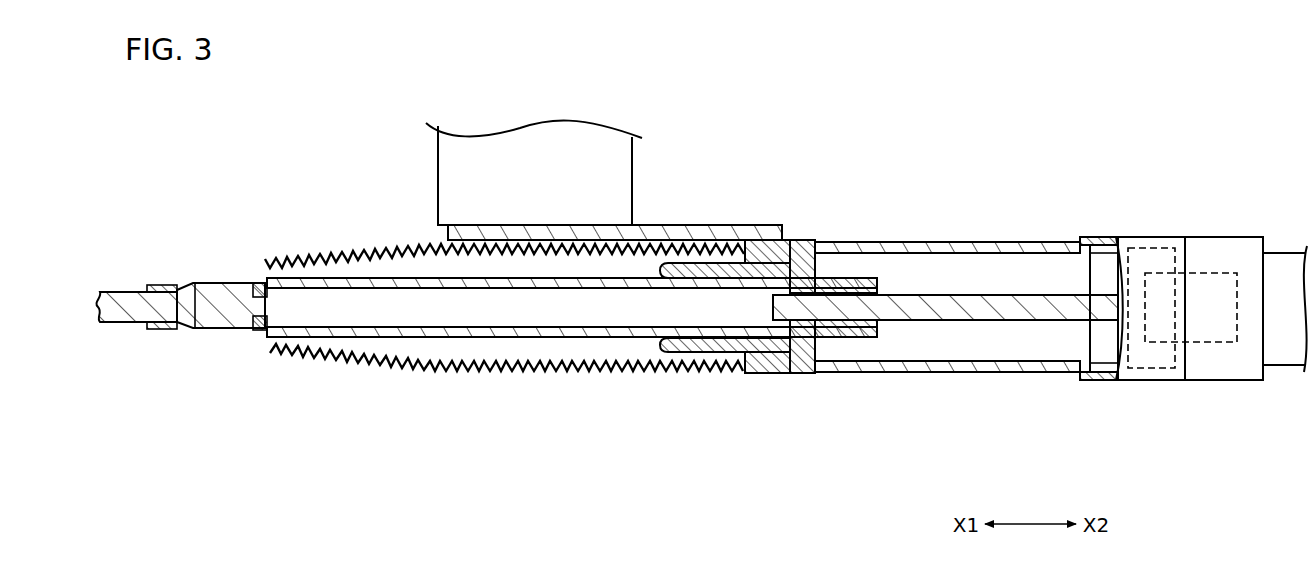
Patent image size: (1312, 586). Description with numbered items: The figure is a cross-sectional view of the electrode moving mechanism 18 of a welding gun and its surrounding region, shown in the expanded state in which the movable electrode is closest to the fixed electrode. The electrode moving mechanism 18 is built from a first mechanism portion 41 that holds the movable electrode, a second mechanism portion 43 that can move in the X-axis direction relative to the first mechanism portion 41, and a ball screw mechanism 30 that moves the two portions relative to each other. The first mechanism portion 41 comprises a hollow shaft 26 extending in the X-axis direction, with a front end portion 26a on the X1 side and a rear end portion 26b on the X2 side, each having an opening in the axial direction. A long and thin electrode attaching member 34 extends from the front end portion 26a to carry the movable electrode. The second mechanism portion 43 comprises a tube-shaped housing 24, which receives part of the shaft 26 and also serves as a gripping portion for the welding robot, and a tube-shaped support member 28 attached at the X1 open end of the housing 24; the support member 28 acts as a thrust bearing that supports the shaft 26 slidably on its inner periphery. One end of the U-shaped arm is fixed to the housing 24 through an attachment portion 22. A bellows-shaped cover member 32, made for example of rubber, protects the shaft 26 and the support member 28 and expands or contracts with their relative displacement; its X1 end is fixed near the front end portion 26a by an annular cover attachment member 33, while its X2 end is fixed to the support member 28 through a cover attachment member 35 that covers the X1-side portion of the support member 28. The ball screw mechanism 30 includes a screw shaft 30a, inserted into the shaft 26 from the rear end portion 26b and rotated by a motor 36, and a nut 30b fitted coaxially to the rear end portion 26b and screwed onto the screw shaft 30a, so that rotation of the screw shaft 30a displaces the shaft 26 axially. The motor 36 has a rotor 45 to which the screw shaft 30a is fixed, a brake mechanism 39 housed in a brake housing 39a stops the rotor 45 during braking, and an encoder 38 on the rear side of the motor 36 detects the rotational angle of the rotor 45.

The electrode moving mechanism 18 is at (1110, 214).
The attachment portion 22 is at (434, 160).
The housing 24 is at (829, 378).
The shaft 26 is at (343, 270).
The front end portion 26a is at (207, 330).
The rear end portion 26b is at (858, 277).
The support member 28 is at (716, 380).
The ball screw mechanism 30 is at (920, 210).
The screw shaft 30a is at (995, 295).
The nut 30b is at (880, 295).
The cover member 32 is at (354, 354).
The cover attachment member 33 is at (263, 341).
The electrode attaching member 34 is at (138, 299).
The cover attachment member 35 is at (752, 241).
The motor 36 is at (1216, 234).
The encoder 38 is at (1290, 246).
The brake mechanism 39 is at (1157, 370).
The brake housing 39a is at (1146, 383).
The first mechanism portion 41 is at (183, 213).
The second mechanism portion 43 is at (840, 437).
The rotor 45 is at (1204, 344).